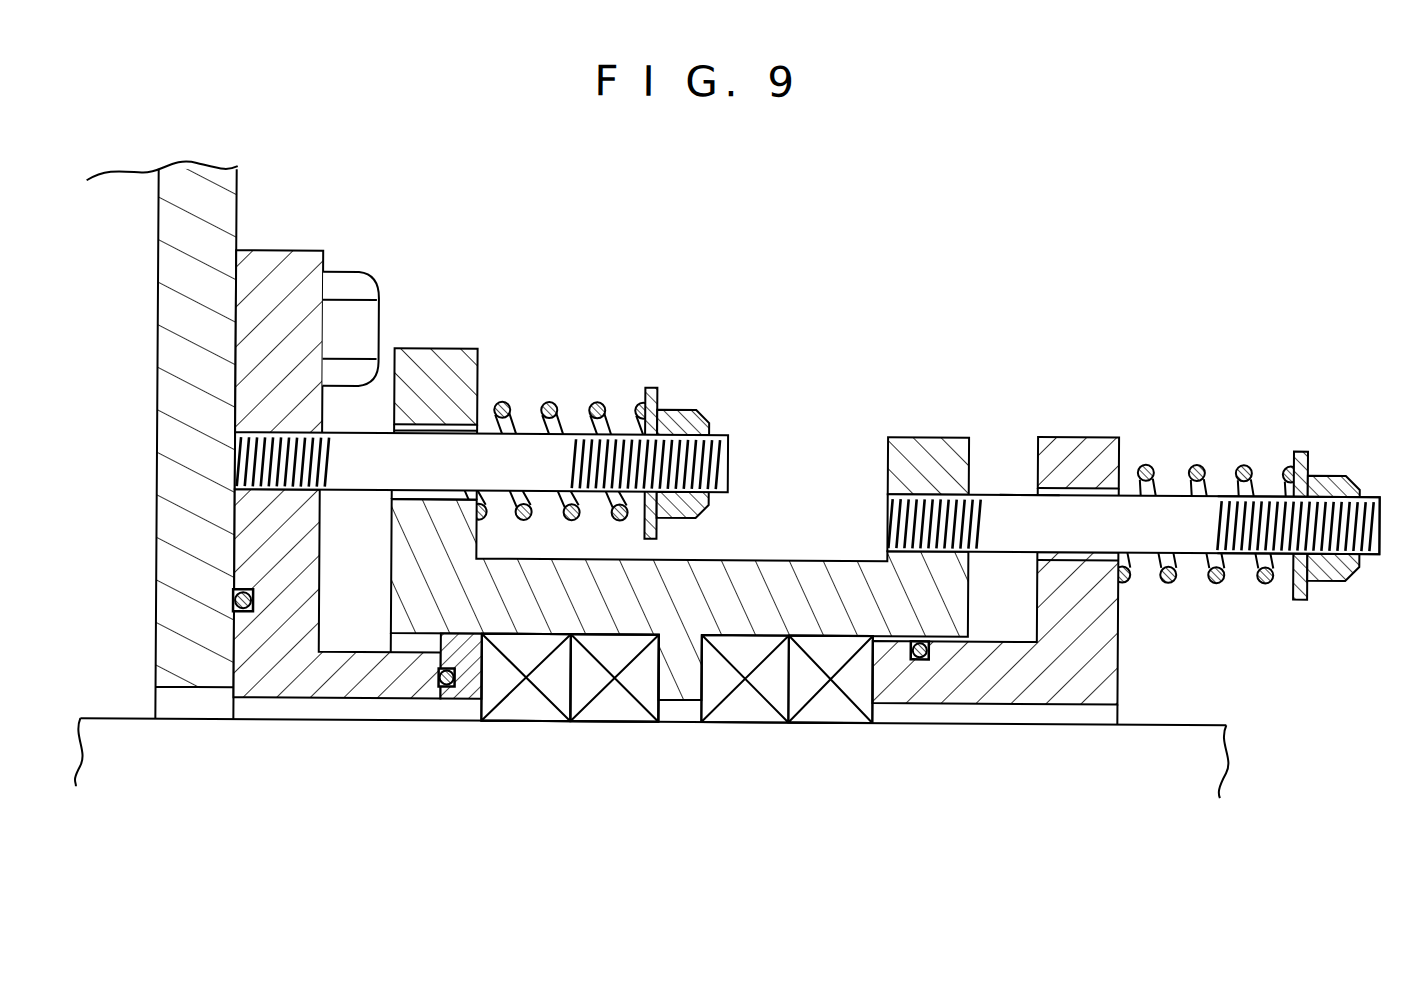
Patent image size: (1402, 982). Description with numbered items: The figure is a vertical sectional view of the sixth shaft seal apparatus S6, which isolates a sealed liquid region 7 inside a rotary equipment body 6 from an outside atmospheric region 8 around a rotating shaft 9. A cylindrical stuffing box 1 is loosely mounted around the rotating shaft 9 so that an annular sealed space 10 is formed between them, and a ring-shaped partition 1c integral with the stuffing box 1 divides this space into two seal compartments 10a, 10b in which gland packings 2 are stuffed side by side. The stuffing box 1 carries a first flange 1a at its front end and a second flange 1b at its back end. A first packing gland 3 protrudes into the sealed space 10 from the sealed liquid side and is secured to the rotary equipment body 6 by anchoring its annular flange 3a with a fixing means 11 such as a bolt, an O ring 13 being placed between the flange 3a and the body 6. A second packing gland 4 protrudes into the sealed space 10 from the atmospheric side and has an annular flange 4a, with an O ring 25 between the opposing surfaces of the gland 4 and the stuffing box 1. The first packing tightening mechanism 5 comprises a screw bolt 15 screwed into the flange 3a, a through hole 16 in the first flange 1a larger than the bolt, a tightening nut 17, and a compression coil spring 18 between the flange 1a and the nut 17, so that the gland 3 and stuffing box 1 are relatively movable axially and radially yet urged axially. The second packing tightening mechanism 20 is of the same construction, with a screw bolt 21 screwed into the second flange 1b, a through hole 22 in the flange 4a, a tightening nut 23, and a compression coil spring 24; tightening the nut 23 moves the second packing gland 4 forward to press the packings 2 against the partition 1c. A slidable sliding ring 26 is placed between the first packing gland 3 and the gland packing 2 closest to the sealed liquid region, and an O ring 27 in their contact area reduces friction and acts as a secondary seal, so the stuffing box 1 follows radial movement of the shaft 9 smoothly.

The stuffing box 1 is at (793, 560).
The first flange 1a is at (454, 357).
The second flange 1b is at (921, 436).
The partition 1c is at (682, 686).
The gland packings 2 is at (596, 714).
The first packing gland 3 is at (345, 684).
The annular flange 3a is at (305, 257).
The second packing gland 4 is at (993, 698).
The annular flange 4a is at (1082, 436).
The first packing tightening mechanism 5 is at (623, 380).
The rotary equipment body 6 is at (232, 204).
The sealed liquid region 7 is at (80, 677).
The atmospheric region 8 is at (1165, 705).
The rotating shaft 9 is at (1213, 722).
The sealed space 10 is at (648, 677).
The seal compartment 10a is at (519, 713).
The seal compartment 10b is at (865, 684).
The fixing means 11 is at (382, 301).
The O ring 13 is at (233, 602).
The screw bolt 15 is at (730, 462).
The through hole 16 is at (413, 504).
The tightening nut 17 is at (690, 408).
The compression coil spring 18 is at (548, 400).
The second packing tightening mechanism 20 is at (1261, 411).
The screw bolt 21 is at (1190, 546).
The through hole 22 is at (1052, 498).
The tightening nut 23 is at (1336, 468).
The compression coil spring 24 is at (1195, 466).
The O ring 25 is at (915, 660).
The sliding ring 26 is at (462, 695).
The O ring 27 is at (437, 677).
The sixth shaft seal apparatus S6 is at (843, 310).